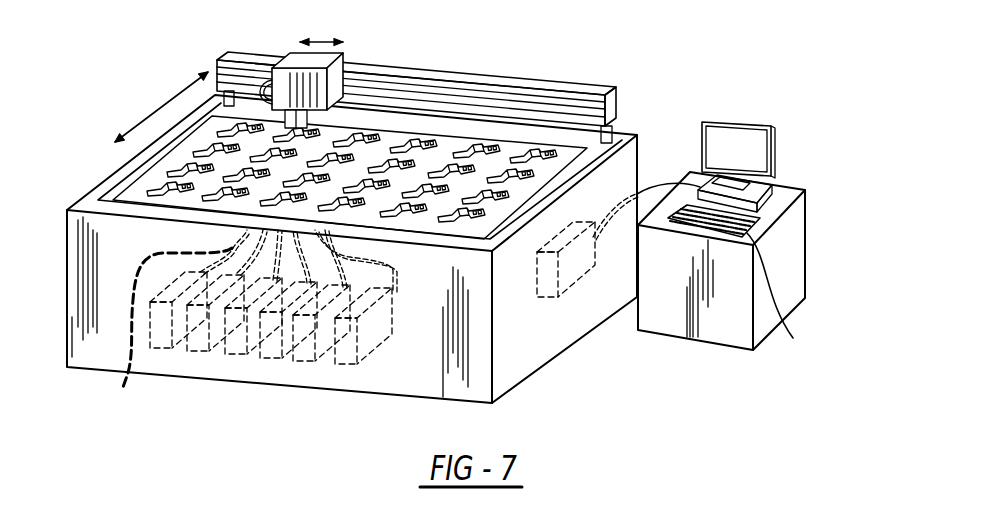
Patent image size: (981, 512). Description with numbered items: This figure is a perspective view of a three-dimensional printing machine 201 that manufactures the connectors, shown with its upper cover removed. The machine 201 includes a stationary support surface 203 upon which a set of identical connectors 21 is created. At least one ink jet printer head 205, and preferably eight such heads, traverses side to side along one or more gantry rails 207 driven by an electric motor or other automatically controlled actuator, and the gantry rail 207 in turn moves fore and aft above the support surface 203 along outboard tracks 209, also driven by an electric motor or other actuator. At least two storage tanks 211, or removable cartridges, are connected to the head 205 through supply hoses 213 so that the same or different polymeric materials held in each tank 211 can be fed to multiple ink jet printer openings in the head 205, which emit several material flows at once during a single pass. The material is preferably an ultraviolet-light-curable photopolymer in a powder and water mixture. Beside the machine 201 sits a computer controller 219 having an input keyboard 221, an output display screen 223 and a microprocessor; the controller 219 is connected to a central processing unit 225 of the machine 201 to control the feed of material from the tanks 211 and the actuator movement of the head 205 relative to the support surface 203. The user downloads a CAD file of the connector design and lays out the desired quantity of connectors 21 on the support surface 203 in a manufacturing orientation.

The connectors 21 is at (450, 218).
The three-dimensional printing machine 201 is at (527, 335).
The stationary support surface 203 is at (428, 220).
The ink jet printer head 205 is at (333, 80).
The gantry rail 207 is at (463, 80).
The outboard tracks 209 is at (122, 182).
The storage tanks 211 is at (233, 342).
The supply hoses 213 is at (171, 333).
The computer controller 219 is at (767, 181).
The input keyboard 221 is at (783, 293).
The output display screen 223 is at (737, 143).
The central processing unit 225 is at (572, 268).